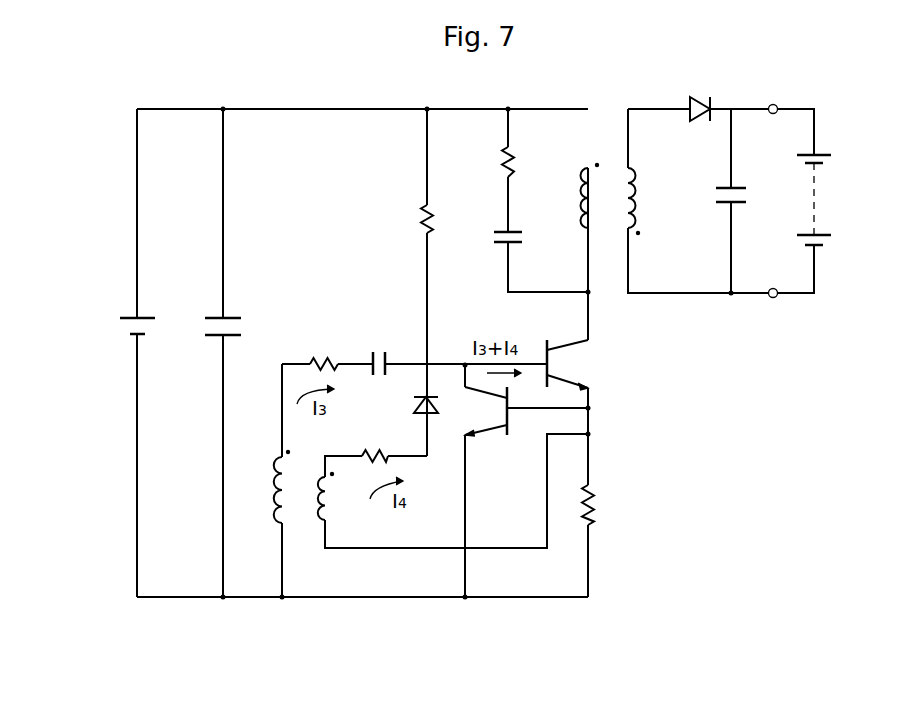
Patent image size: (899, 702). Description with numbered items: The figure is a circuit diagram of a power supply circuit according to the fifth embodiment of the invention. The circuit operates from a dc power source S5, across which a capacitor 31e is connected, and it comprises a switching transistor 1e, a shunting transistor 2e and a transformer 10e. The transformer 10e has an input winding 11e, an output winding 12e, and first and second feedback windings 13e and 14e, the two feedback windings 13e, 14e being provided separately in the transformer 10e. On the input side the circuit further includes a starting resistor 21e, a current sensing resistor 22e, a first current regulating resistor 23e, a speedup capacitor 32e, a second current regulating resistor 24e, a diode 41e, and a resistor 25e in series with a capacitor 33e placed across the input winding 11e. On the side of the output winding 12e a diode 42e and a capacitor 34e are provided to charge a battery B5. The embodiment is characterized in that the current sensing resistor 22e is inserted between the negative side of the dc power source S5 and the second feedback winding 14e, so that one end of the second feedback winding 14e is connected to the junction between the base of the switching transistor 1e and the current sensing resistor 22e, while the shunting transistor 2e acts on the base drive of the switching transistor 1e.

The switching transistor 1e is at (575, 362).
The shunting transistor 2e is at (483, 417).
The transformer 10e is at (610, 197).
The input winding 11e is at (578, 207).
The output winding 12e is at (642, 197).
The first feedback winding 13e is at (279, 500).
The second feedback winding 14e is at (330, 505).
The starting resistor 21e is at (422, 215).
The current sensing resistor 22e is at (594, 500).
The first current regulating resistor 23e is at (322, 364).
The second current regulating resistor 24e is at (372, 456).
The resistor 25e is at (513, 158).
The capacitor 31e is at (237, 328).
The speedup capacitor 32e is at (378, 352).
The capacitor 33e is at (518, 237).
The capacitor 34e is at (733, 197).
The diode 41e is at (415, 410).
The diode 42e is at (700, 95).
The dc power source S5 is at (120, 322).
The battery B5 is at (818, 200).